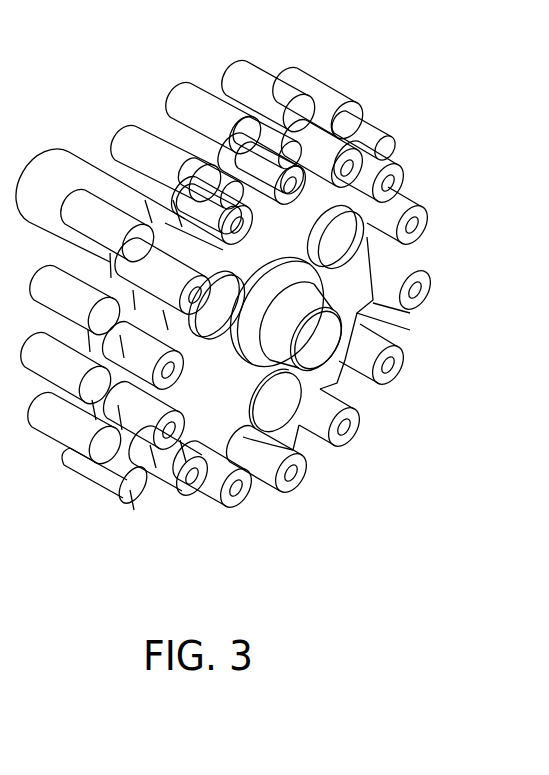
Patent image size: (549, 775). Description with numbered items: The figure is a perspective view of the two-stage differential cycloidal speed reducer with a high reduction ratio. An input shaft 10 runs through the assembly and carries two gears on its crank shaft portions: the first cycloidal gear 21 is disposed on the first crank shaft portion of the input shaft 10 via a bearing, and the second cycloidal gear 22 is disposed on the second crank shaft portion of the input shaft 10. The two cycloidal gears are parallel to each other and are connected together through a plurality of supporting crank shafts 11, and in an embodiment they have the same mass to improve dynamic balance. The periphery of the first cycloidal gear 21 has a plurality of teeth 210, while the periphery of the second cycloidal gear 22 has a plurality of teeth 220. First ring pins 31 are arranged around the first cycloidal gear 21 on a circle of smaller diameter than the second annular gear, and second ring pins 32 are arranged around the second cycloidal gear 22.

The input shaft 10 is at (63, 157).
The first ring pins 31 is at (125, 142).
The first cycloidal gear 21 is at (200, 157).
The teeth 210 is at (207, 157).
The supporting crank shafts 11 is at (357, 228).
The second ring pins 32 is at (400, 268).
The second cycloidal gear 22 is at (357, 315).
The teeth 220 is at (333, 392).